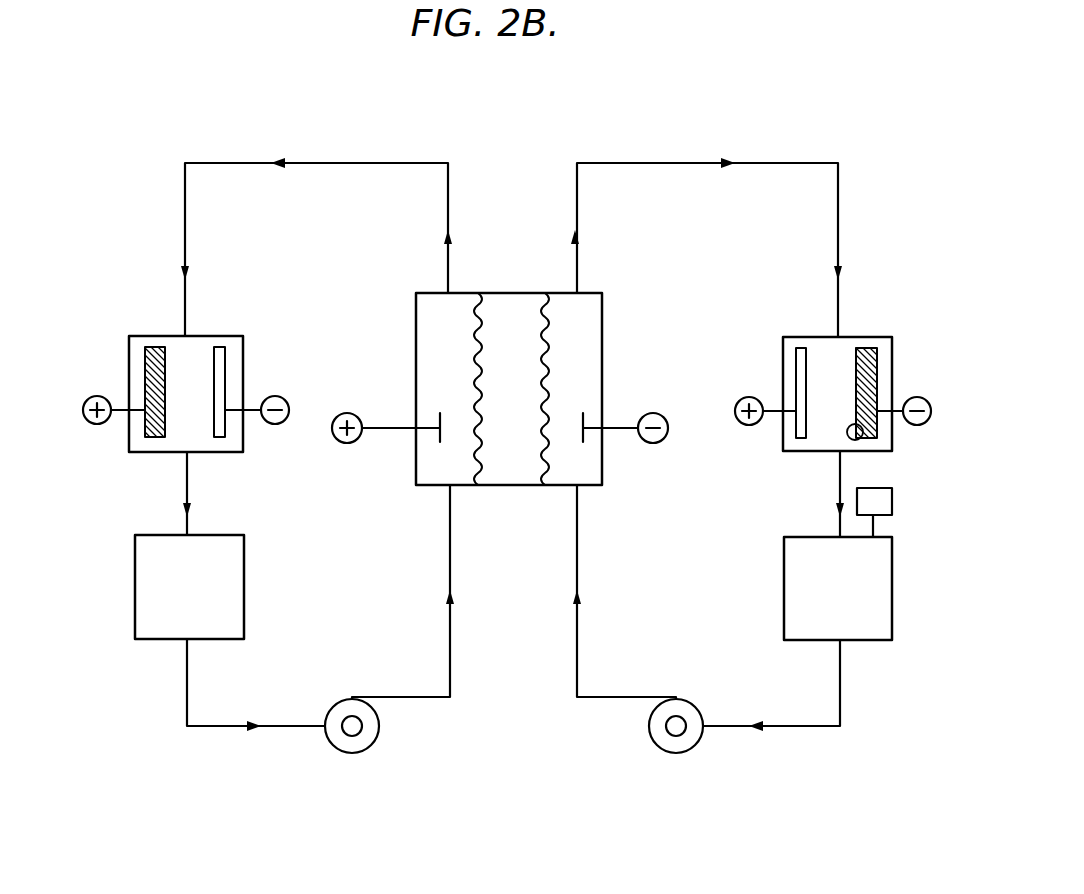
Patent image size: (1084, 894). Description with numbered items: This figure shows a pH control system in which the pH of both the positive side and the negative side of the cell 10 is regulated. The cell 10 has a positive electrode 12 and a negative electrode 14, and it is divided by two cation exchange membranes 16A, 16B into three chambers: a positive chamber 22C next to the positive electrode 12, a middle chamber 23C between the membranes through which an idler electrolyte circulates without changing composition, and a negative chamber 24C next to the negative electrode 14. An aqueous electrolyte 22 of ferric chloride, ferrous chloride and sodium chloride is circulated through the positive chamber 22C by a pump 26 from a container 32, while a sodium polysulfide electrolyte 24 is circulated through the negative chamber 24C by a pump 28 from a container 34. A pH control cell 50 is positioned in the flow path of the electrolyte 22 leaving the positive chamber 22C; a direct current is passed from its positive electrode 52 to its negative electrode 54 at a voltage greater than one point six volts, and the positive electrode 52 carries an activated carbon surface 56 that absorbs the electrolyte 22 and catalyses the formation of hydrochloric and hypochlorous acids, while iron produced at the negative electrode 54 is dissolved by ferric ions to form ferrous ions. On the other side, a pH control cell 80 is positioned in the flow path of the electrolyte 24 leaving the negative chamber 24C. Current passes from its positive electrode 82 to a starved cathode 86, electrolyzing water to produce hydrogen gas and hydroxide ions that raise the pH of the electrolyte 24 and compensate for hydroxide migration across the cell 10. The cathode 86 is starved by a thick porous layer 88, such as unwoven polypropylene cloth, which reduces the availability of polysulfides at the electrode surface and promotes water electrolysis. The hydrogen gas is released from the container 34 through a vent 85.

The cell 10 is at (500, 280).
The positive electrode 12 is at (386, 426).
The negative electrode 14 is at (620, 426).
The cation exchange membrane 16A is at (474, 328).
The cation exchange membrane 16B is at (549, 322).
The positive chamber 22C is at (437, 392).
The middle chamber 23C is at (503, 392).
The negative chamber 24C is at (565, 392).
The electrolyte 22 is at (448, 553).
The electrolyte 24 is at (577, 550).
The pump 26 is at (334, 704).
The pump 28 is at (695, 703).
The container 32 is at (244, 580).
The container 34 is at (797, 591).
The pH control cell 50 is at (120, 336).
The positive electrode 52 is at (145, 367).
The negative electrode 54 is at (225, 365).
The activated carbon surface 56 is at (162, 357).
The pH control cell 80 is at (902, 336).
The positive electrode 82 is at (796, 360).
The vent 85 is at (892, 505).
The starved cathode 86 is at (877, 360).
The porous layer 88 is at (861, 440).